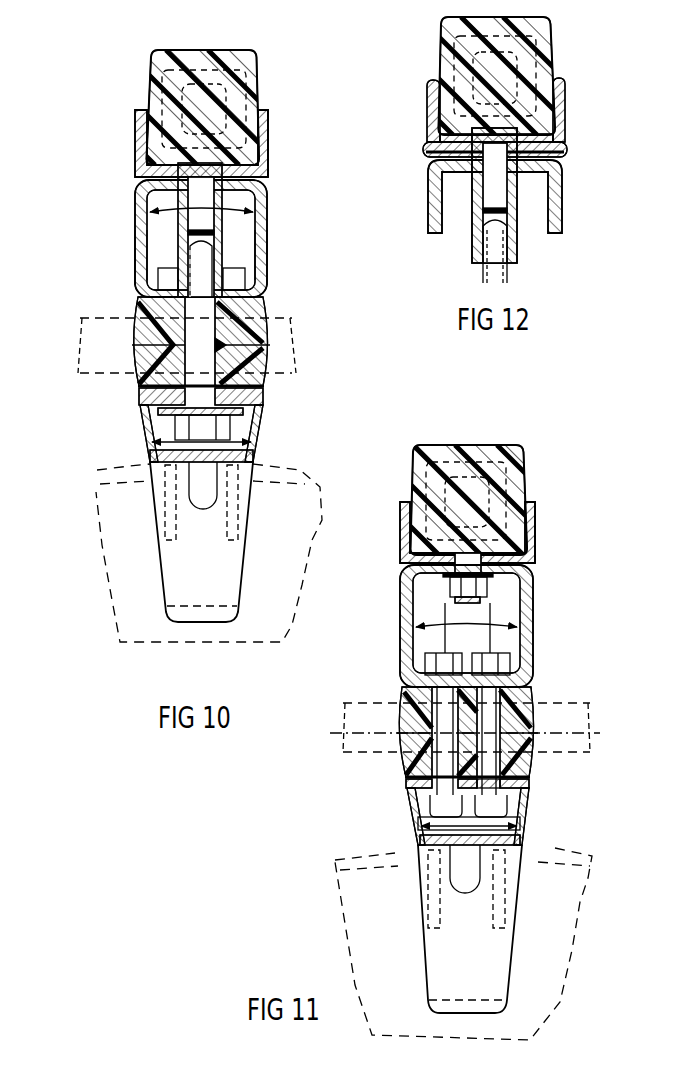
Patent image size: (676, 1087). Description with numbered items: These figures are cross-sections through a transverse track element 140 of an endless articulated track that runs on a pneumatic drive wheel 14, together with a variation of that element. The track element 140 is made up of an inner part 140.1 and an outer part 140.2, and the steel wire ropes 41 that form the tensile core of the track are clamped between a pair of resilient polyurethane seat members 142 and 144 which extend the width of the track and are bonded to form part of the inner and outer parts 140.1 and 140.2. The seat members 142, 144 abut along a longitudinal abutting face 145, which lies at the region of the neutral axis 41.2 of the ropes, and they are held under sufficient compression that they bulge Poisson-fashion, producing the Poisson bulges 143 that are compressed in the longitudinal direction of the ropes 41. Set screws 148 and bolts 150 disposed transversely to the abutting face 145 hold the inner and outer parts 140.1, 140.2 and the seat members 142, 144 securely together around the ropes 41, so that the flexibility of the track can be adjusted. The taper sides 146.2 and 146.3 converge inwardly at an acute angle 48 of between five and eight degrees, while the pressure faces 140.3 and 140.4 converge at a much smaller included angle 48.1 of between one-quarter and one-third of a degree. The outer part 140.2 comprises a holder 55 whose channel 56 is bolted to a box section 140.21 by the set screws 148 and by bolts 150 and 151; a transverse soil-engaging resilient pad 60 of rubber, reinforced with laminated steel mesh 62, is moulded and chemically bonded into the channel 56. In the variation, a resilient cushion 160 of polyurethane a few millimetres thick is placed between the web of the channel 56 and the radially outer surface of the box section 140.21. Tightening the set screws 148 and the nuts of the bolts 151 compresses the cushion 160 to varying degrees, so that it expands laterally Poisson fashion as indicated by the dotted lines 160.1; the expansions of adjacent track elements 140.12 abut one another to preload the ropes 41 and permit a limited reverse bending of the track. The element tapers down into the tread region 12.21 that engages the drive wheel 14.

In FIG. 10, the tapered post of base 12.21 is at (166, 553).
In FIG. 11, the tapered post of base 12.21 is at (506, 965).
In FIG. 10, the pneumatic drive wheel 14 is at (300, 530).
In FIG. 11, the pneumatic drive wheel 14 is at (556, 912).
In FIG. 10, the steel wire rope 41 is at (196, 318).
In FIG. 11, the steel wire rope 41 is at (580, 760).
In FIG. 11, the neutral axis 41.2 is at (598, 735).
In FIG. 10, the acute angle 48 is at (228, 432).
In FIG. 11, the acute angle 48 is at (470, 890).
In FIG. 10, the included angle 48.1 is at (252, 210).
In FIG. 11, the included angle 48.1 is at (518, 625).
In FIG. 10, the holder 55 is at (132, 132).
In FIG. 12, the holder 55 is at (412, 102).
In FIG. 11, the holder 55 is at (395, 527).
In FIG. 10, the channel 56 is at (268, 115).
In FIG. 12, the channel 56 is at (565, 94).
In FIG. 11, the channel 56 is at (536, 527).
In FIG. 10, the resilient pad 60 is at (236, 49).
In FIG. 12, the resilient pad 60 is at (515, 17).
In FIG. 11, the resilient pad 60 is at (500, 445).
In FIG. 10, the steel mesh 62 is at (255, 82).
In FIG. 12, the steel mesh 62 is at (545, 66).
In FIG. 11, the steel mesh 62 is at (470, 444).
In FIG. 10, the transverse track element 140 is at (106, 184).
In FIG. 12, the transverse track element 140 is at (405, 165).
In FIG. 11, the transverse track element 140 is at (565, 570).
In FIG. 10, the inner part 140.1 is at (134, 414).
In FIG. 11, the inner part 140.1 is at (537, 811).
In FIG. 10, the outer part 140.2 is at (130, 243).
In FIG. 12, the outer part 140.2 is at (425, 217).
In FIG. 11, the outer part 140.2 is at (538, 623).
In FIG. 10, the pressure face 140.3 is at (268, 243).
In FIG. 12, the pressure face 140.3 is at (562, 187).
In FIG. 11, the pressure face 140.3 is at (535, 650).
In FIG. 10, the pressure face 140.4 is at (140, 250).
In FIG. 11, the pressure face 140.4 is at (408, 627).
In FIG. 12, the adjacent track elements 140.12 is at (430, 245).
In FIG. 10, the box section 140.21 is at (268, 262).
In FIG. 12, the box section 140.21 is at (563, 224).
In FIG. 11, the box section 140.21 is at (406, 660).
In FIG. 10, the resilient seat member 142 is at (140, 312).
In FIG. 11, the resilient seat member 142 is at (410, 698).
In FIG. 10, the Poisson bulge 143 is at (120, 346).
In FIG. 11, the Poisson bulge 143 is at (386, 720).
In FIG. 10, the resilient seat member 144 is at (140, 372).
In FIG. 11, the resilient seat member 144 is at (425, 772).
In FIG. 10, the abutting face 145 is at (272, 350).
In FIG. 11, the abutting face 145 is at (396, 735).
In FIG. 10, the taper side 146.2 is at (150, 434).
In FIG. 11, the taper side 146.2 is at (412, 824).
In FIG. 10, the taper side 146.3 is at (245, 432).
In FIG. 11, the taper side 146.3 is at (532, 822).
In FIG. 10, the set screw 148 is at (205, 372).
In FIG. 12, the set screw 148 is at (490, 285).
In FIG. 11, the bolt 150 is at (492, 782).
In FIG. 11, the bolt 151 is at (445, 560).
In FIG. 12, the resilient cushion 160 is at (570, 141).
In FIG. 12, the lateral expansion 160.1 is at (422, 150).